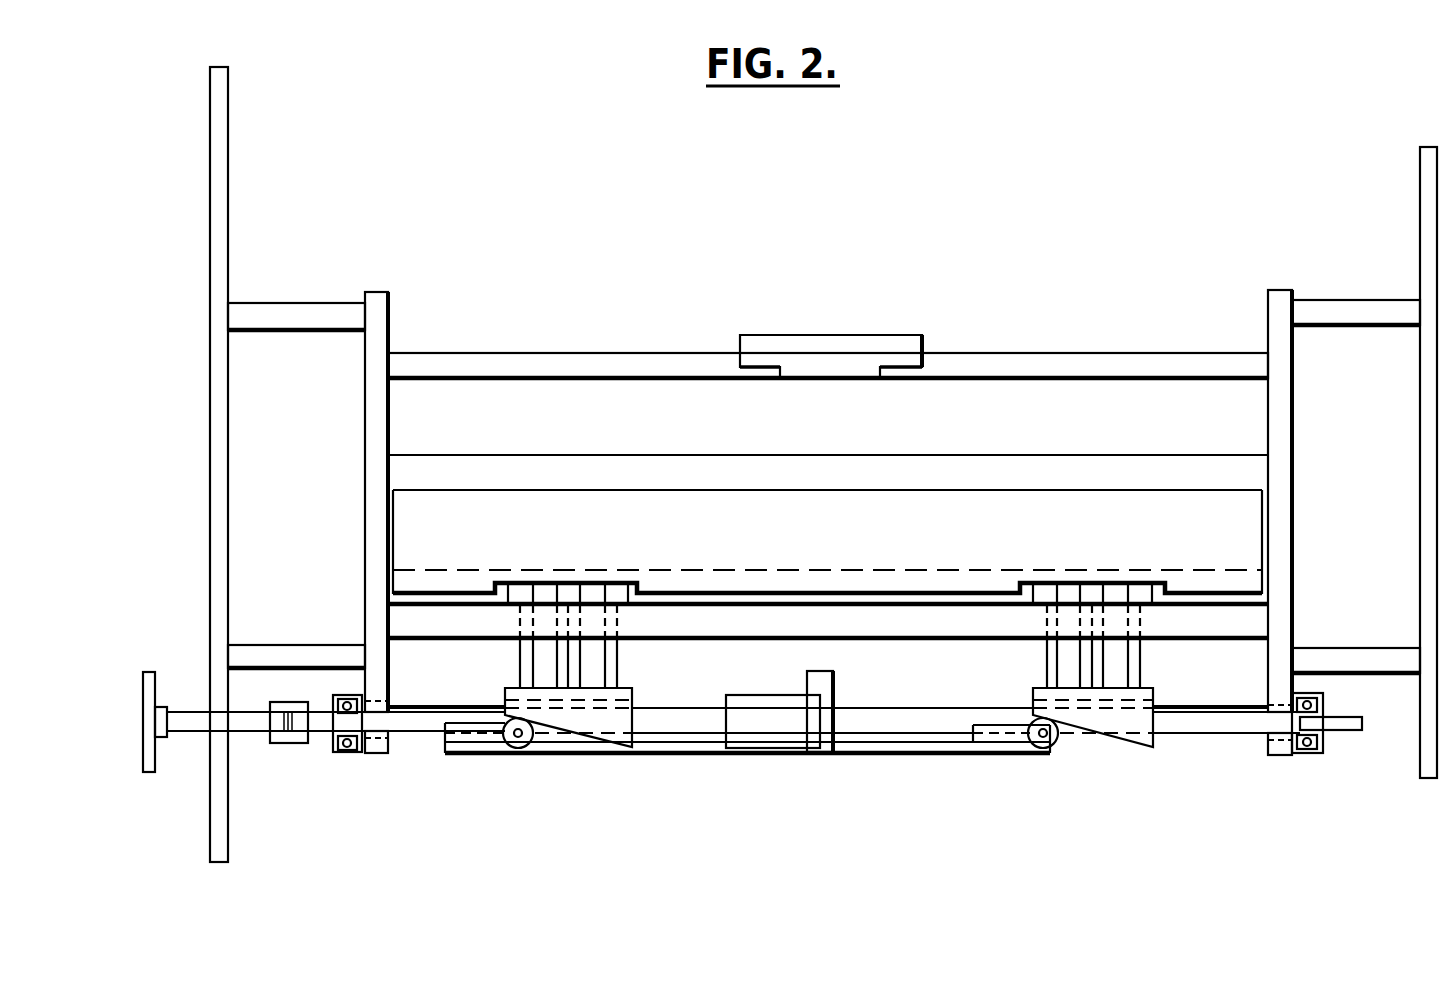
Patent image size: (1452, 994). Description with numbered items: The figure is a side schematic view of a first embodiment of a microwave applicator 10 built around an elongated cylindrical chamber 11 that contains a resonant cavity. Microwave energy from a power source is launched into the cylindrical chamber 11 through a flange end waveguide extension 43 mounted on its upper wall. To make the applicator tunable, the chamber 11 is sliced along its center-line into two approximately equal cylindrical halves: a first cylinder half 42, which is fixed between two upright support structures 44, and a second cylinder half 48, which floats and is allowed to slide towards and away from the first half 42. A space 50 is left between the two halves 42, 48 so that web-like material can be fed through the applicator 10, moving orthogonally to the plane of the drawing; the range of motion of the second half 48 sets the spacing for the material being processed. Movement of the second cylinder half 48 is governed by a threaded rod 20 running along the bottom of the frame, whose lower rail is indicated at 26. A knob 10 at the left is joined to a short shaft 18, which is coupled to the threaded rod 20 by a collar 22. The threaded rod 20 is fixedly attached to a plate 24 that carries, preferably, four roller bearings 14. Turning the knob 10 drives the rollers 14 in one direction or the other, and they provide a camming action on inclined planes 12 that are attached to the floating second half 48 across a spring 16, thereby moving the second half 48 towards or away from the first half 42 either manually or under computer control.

The microwave applicator 10 is at (152, 672).
The elongated cylindrical chamber 11 is at (468, 392).
The inclined planes 12 is at (592, 723).
The roller bearings 14 is at (517, 748).
The spring 16 is at (619, 670).
The short shaft 18 is at (188, 732).
The threaded rod 20 is at (417, 735).
The collar 22 is at (290, 745).
The plate 24 is at (928, 748).
The lower frame rail 26 is at (1219, 640).
The first cylinder half 42 is at (1128, 368).
The flange end waveguide extension 43 is at (880, 372).
The support structures 44 is at (385, 292).
The second cylinder half 48 is at (1264, 508).
The space 50 is at (778, 482).